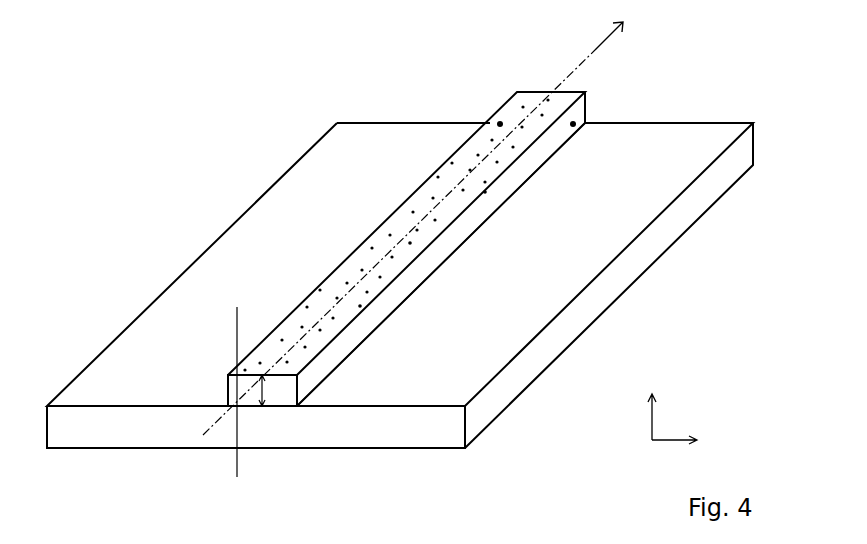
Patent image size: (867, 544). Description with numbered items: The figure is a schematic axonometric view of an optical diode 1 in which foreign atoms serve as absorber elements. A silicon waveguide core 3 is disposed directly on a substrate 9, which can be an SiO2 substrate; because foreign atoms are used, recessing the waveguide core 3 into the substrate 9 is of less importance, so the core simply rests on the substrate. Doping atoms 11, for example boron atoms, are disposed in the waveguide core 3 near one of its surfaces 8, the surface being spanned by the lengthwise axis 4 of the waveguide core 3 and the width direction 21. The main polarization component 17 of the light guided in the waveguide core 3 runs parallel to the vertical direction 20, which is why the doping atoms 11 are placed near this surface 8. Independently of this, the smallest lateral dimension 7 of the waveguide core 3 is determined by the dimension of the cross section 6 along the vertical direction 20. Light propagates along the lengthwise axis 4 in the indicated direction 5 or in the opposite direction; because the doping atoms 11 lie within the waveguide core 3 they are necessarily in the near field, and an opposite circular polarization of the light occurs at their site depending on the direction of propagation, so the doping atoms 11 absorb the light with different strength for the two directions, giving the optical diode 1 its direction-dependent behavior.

The optical diode 1 is at (196, 132).
The waveguide core 3 is at (418, 190).
The lengthwise axis 4 is at (580, 66).
The feed direction 5 is at (604, 40).
The cross section 6 is at (298, 407).
The smallest lateral dimension 7 is at (240, 452).
The surface 8 is at (498, 120).
The substrate 9 is at (270, 256).
The doping atoms 11 is at (486, 194).
The main polarization component 17 is at (266, 396).
The vertical direction 20 is at (654, 404).
The width direction 21 is at (692, 441).